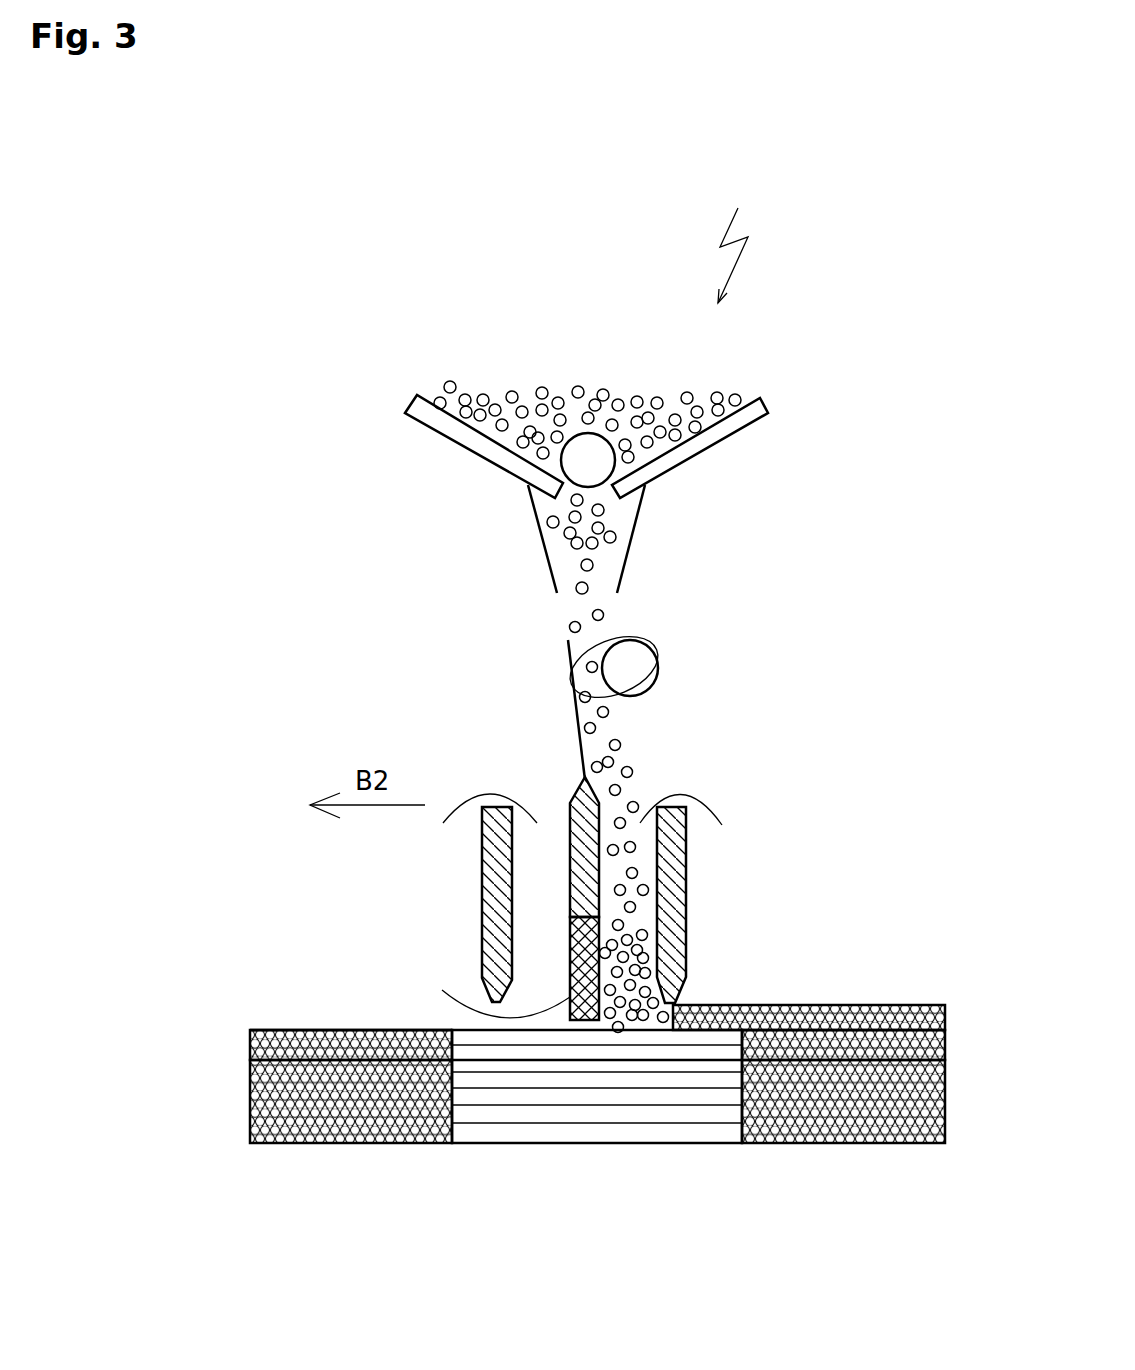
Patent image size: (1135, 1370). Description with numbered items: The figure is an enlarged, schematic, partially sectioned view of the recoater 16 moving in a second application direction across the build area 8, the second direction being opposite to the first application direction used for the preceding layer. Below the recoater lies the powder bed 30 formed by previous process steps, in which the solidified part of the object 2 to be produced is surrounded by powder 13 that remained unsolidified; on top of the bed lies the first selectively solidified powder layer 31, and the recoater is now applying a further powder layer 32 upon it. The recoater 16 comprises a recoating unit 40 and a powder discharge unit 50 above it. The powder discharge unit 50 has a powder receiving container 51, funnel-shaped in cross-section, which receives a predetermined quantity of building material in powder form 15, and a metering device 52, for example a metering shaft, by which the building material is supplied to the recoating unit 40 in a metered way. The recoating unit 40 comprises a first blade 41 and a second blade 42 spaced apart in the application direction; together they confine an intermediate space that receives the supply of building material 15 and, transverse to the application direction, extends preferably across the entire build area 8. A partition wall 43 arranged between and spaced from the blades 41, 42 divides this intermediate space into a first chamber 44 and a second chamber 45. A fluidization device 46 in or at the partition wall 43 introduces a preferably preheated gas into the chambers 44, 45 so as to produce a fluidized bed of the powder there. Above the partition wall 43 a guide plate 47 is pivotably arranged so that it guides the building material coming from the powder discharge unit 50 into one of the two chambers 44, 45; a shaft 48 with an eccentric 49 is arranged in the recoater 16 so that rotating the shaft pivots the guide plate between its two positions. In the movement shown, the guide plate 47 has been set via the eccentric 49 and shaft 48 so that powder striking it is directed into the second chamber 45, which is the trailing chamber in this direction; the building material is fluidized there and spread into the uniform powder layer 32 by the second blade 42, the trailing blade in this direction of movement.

The recoater 16 is at (742, 241).
The powder discharge unit 50 is at (585, 456).
The powder receiving container 51 is at (495, 465).
The metering device 52 is at (593, 472).
The building material in powder form 15 is at (570, 400).
The shaft 48 is at (618, 668).
The eccentric 49 is at (590, 653).
The guide plate 47 is at (577, 723).
The recoating unit 40 is at (584, 865).
The first blade 41 is at (487, 975).
The second blade 42 is at (678, 958).
The partition wall 43 is at (598, 823).
The first chamber 44 is at (473, 823).
The second chamber 45 is at (700, 825).
The fluidization device 46 is at (489, 990).
The build area 8 is at (307, 1027).
The first selectively solidified powder layer 31 is at (250, 1046).
The powder bed 30 is at (561, 1074).
The further powder layer 32 is at (878, 1003).
The powder 13 is at (323, 1123).
The object 2 is at (573, 1115).